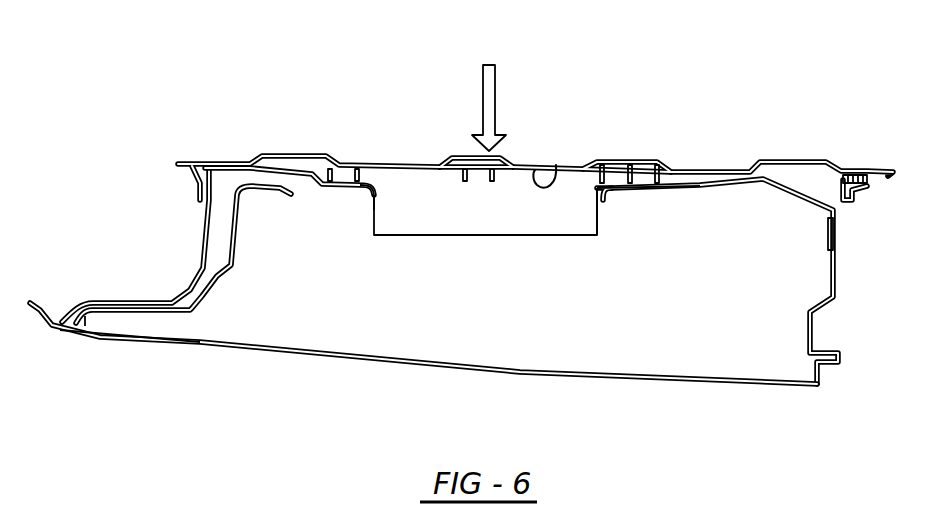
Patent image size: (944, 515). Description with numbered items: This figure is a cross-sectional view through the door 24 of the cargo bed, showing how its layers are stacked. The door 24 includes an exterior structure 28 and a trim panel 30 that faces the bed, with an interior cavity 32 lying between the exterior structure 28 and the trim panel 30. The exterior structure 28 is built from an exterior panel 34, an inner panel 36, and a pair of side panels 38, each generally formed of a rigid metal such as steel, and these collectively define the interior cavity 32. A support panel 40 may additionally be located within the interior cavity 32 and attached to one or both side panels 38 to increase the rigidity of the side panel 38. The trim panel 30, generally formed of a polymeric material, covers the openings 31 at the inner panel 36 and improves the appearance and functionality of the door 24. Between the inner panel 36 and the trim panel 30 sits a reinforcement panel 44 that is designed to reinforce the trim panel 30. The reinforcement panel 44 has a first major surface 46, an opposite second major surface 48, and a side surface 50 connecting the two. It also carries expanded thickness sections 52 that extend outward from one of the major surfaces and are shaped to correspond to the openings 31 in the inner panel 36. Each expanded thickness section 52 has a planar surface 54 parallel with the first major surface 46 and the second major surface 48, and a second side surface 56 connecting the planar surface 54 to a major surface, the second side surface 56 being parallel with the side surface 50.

The door 24 is at (225, 83).
The exterior structure 28 is at (657, 383).
The trim panel 30 is at (808, 161).
The openings 31 is at (367, 196).
The interior cavity 32 is at (552, 300).
The exterior panel 34 is at (237, 350).
The inner panel 36 is at (322, 193).
The side panels 38 is at (203, 250).
The support panel 40 is at (232, 270).
The reinforcement panel 44 is at (409, 234).
The first major surface 46 is at (556, 165).
The second major surface 48 is at (642, 187).
The side surface 50 is at (313, 162).
The expanded thickness sections 52 is at (590, 238).
The planar surface 54 is at (480, 237).
The second side surface 56 is at (600, 220).